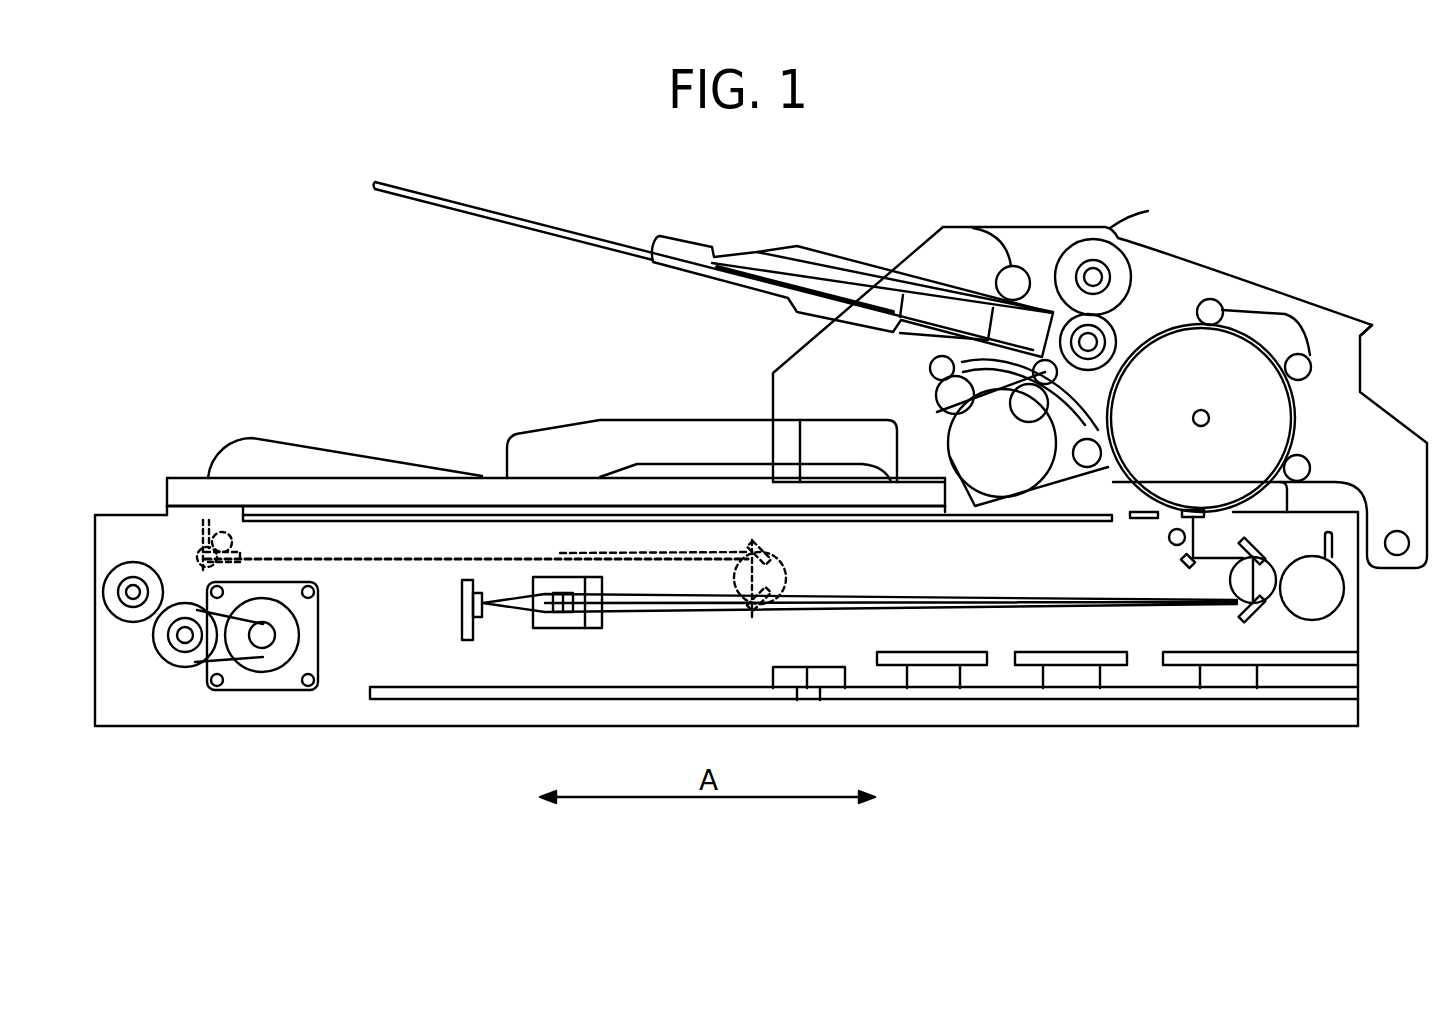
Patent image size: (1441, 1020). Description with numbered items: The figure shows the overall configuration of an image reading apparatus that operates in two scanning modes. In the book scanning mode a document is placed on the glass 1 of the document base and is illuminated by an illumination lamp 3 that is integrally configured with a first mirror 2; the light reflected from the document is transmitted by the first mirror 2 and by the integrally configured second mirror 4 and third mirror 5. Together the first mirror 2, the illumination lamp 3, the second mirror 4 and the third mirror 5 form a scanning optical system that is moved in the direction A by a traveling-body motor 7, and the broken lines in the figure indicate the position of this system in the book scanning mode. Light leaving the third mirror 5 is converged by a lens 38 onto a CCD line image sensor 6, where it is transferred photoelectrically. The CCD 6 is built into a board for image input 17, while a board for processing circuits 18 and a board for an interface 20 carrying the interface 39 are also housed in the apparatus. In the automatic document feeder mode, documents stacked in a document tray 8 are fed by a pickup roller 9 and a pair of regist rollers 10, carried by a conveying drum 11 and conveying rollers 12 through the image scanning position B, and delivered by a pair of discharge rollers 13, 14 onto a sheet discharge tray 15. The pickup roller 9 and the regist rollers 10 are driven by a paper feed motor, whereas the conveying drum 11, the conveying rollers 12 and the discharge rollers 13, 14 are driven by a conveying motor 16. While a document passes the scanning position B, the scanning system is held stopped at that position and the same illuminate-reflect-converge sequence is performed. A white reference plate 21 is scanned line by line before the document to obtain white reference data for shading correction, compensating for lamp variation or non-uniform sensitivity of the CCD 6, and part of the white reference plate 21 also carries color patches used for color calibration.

The glass 1 is at (1020, 521).
The first mirror 2 is at (1183, 570).
The illumination lamp 3 is at (1170, 540).
The second mirror 4 is at (1256, 548).
The third mirror 5 is at (1260, 617).
The CCD line image sensor 6 is at (483, 620).
The traveling-body motor 7 is at (318, 625).
The document tray 8 is at (668, 235).
The pickup roller 9 is at (960, 227).
The pair of regist rollers 10 is at (1117, 333).
The conveying drum 11 is at (1181, 325).
The conveying rollers 12 is at (1372, 325).
The discharge roller 13 is at (1058, 375).
The discharge roller 14 is at (930, 370).
The sheet discharge tray 15 is at (677, 460).
The conveying motor 16 is at (968, 447).
The board for image input 17 is at (460, 628).
The board for processing circuits 18 is at (530, 703).
The board for an interface 20 is at (1147, 700).
The white reference plate 21 is at (1117, 519).
The lens 38 is at (567, 628).
The interface 39 is at (1333, 652).
The image scanning position B is at (1193, 510).